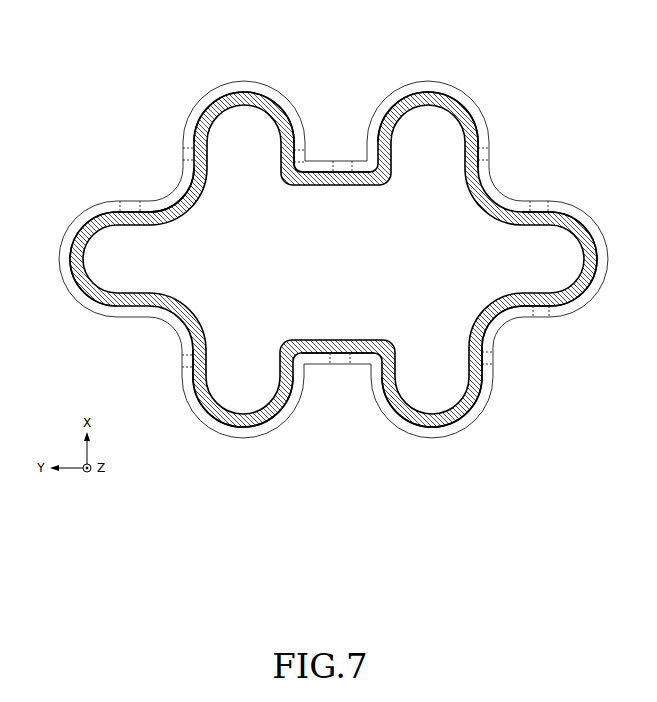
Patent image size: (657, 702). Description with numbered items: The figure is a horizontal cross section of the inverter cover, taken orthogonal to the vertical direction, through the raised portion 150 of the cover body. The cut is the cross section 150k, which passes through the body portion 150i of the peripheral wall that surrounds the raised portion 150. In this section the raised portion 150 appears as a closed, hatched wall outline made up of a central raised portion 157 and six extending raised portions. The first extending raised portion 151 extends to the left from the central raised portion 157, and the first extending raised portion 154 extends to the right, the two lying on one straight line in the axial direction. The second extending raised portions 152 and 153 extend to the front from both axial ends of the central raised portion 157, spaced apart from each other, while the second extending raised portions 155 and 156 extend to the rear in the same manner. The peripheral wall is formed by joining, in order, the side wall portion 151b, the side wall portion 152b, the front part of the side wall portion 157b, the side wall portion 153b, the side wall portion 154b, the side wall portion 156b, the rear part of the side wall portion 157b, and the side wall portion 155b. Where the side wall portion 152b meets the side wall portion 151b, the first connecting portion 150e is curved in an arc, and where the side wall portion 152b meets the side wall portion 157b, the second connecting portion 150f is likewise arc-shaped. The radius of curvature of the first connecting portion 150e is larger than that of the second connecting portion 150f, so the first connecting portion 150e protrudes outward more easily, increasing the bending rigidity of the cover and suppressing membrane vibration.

The raised portion 150 is at (500, 125).
The first connecting portion 150e is at (175, 193).
The second connecting portion 150f is at (305, 171).
The body portion 150i is at (540, 309).
The cross section 150k is at (562, 303).
The first extending raised portion 151 is at (73, 214).
The side wall portion 151b is at (128, 200).
The second extending raised portion 152 is at (247, 80).
The side wall portion 152b is at (299, 152).
The second extending raised portion 153 is at (423, 79).
The side wall portion 153b is at (471, 152).
The first extending raised portion 154 is at (582, 208).
The side wall portion 154b is at (541, 201).
The second extending raised portion 155 is at (247, 440).
The side wall portion 155b is at (213, 418).
The second extending raised portion 156 is at (423, 440).
The side wall portion 156b is at (385, 414).
The central raised portion 157 is at (340, 354).
The side wall portion 157b is at (342, 163).